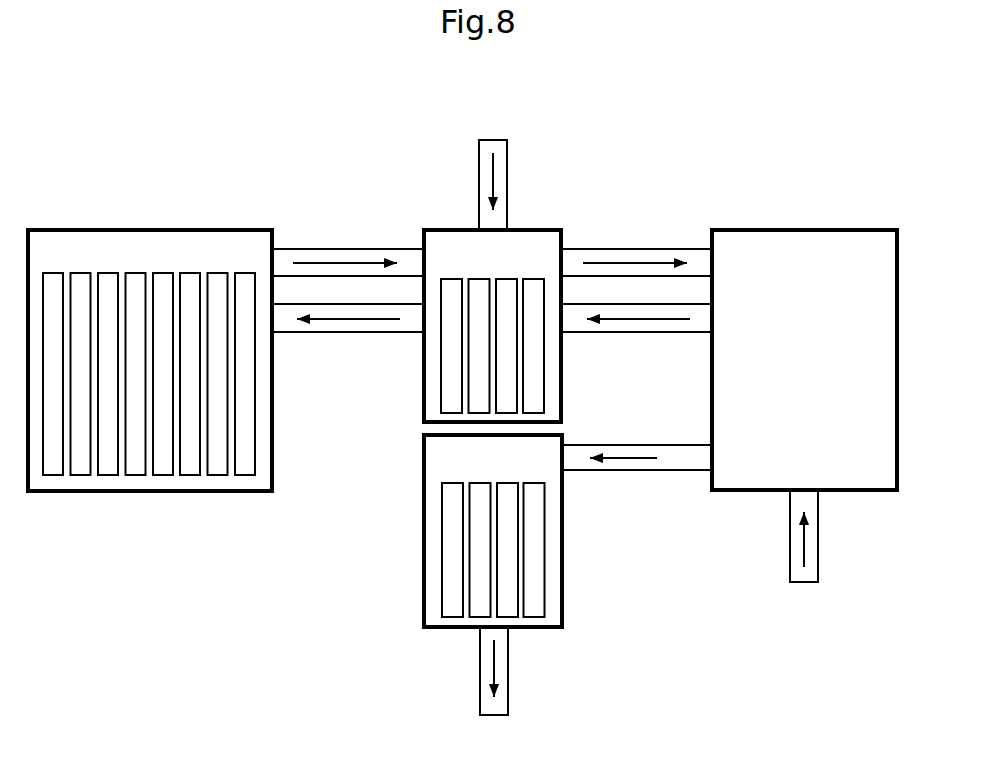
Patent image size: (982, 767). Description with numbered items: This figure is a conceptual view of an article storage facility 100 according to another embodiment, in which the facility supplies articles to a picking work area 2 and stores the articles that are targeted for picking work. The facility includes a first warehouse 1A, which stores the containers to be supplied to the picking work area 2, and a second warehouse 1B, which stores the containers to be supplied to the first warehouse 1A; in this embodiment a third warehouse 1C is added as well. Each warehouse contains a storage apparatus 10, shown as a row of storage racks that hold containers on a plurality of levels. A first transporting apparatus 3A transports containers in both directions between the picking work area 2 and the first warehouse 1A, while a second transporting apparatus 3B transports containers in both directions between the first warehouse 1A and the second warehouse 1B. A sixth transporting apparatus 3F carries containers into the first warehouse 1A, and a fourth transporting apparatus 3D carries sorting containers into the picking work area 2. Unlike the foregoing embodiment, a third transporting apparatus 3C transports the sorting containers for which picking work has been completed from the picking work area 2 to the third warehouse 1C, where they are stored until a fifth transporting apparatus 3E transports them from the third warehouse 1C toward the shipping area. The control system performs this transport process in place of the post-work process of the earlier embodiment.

The article storage facility 100 is at (200, 120).
The first warehouse 1A is at (455, 228).
The second warehouse 1B is at (137, 227).
The third warehouse 1C is at (420, 508).
The picking work area 2 is at (813, 227).
The first transporting apparatus 3A is at (628, 304).
The second transporting apparatus 3B is at (356, 304).
The third transporting apparatus 3C is at (633, 473).
The fourth transporting apparatus 3D is at (790, 535).
The fifth transporting apparatus 3E is at (508, 672).
The sixth transporting apparatus 3F is at (507, 177).
The storage apparatus 10 is at (110, 468).